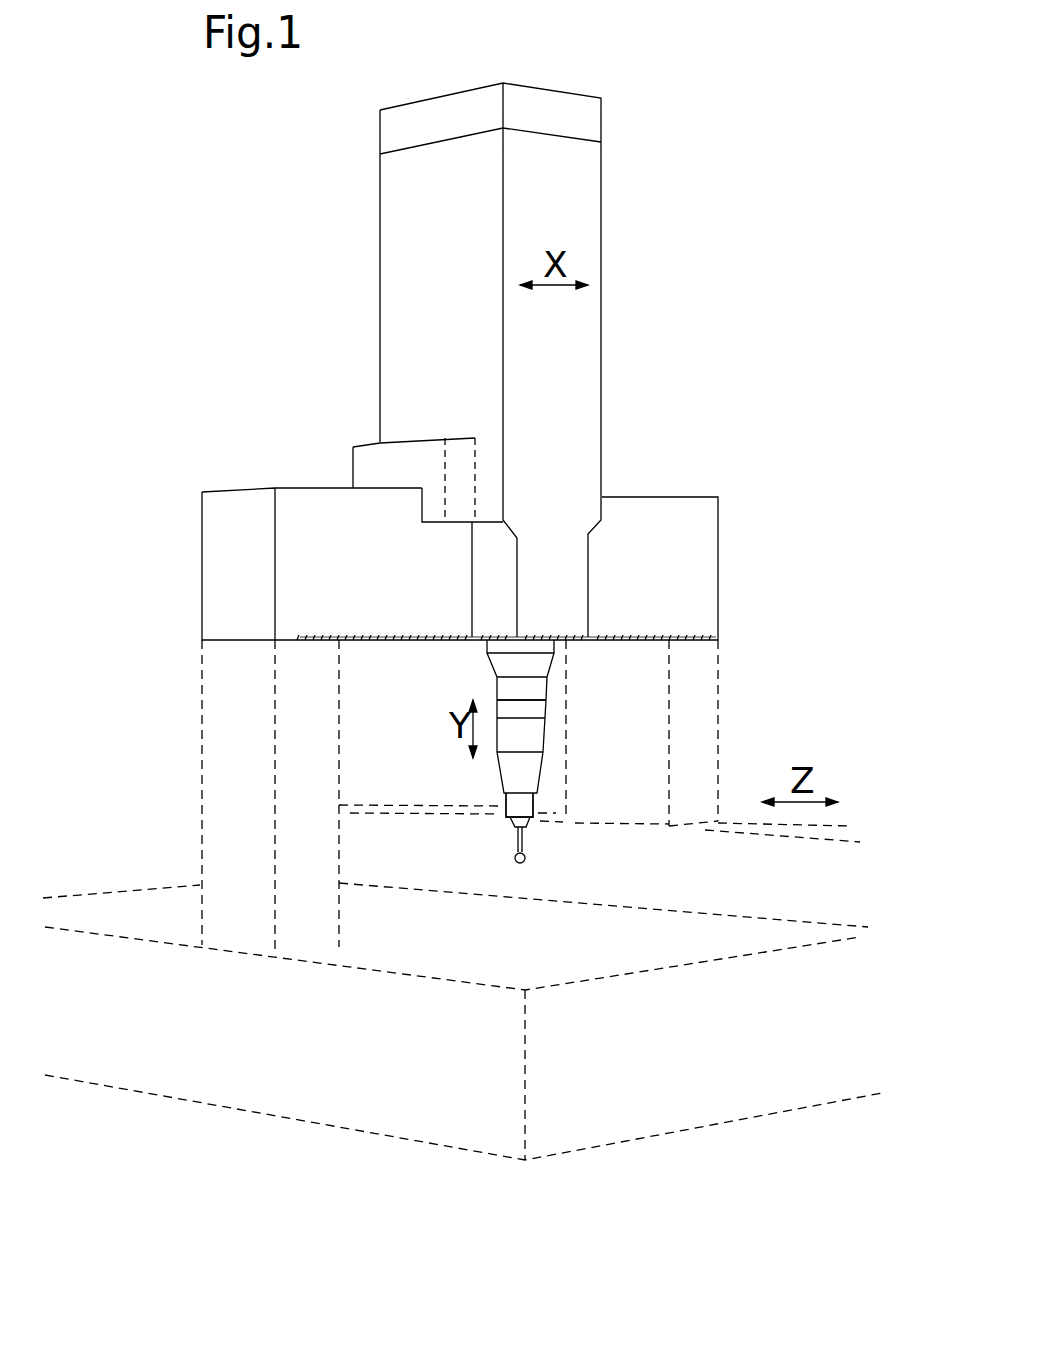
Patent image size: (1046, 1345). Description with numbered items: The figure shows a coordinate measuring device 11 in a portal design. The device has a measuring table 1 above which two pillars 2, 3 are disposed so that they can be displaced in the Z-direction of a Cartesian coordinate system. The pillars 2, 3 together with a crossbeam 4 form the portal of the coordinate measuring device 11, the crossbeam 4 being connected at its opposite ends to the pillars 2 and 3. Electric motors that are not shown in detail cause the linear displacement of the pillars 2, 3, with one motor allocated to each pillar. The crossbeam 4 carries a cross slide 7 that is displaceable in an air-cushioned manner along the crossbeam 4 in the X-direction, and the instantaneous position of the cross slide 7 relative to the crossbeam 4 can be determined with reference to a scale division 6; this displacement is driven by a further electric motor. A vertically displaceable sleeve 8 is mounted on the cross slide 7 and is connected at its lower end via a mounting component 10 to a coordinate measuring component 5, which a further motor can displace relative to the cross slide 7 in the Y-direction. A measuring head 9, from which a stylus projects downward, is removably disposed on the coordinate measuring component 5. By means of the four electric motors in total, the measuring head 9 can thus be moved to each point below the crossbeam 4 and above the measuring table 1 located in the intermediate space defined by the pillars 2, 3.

The measuring table 1 is at (118, 893).
The pillar 2 is at (719, 756).
The pillar 3 is at (201, 736).
The crossbeam 4 is at (240, 488).
The coordinate measuring component 5 is at (497, 752).
The scale division 6 is at (642, 640).
The cross slide 7 is at (381, 221).
The sleeve 8 is at (543, 647).
The measuring head 9 is at (522, 807).
The mounting component 10 is at (497, 700).
The coordinate measuring device 11 is at (172, 1135).